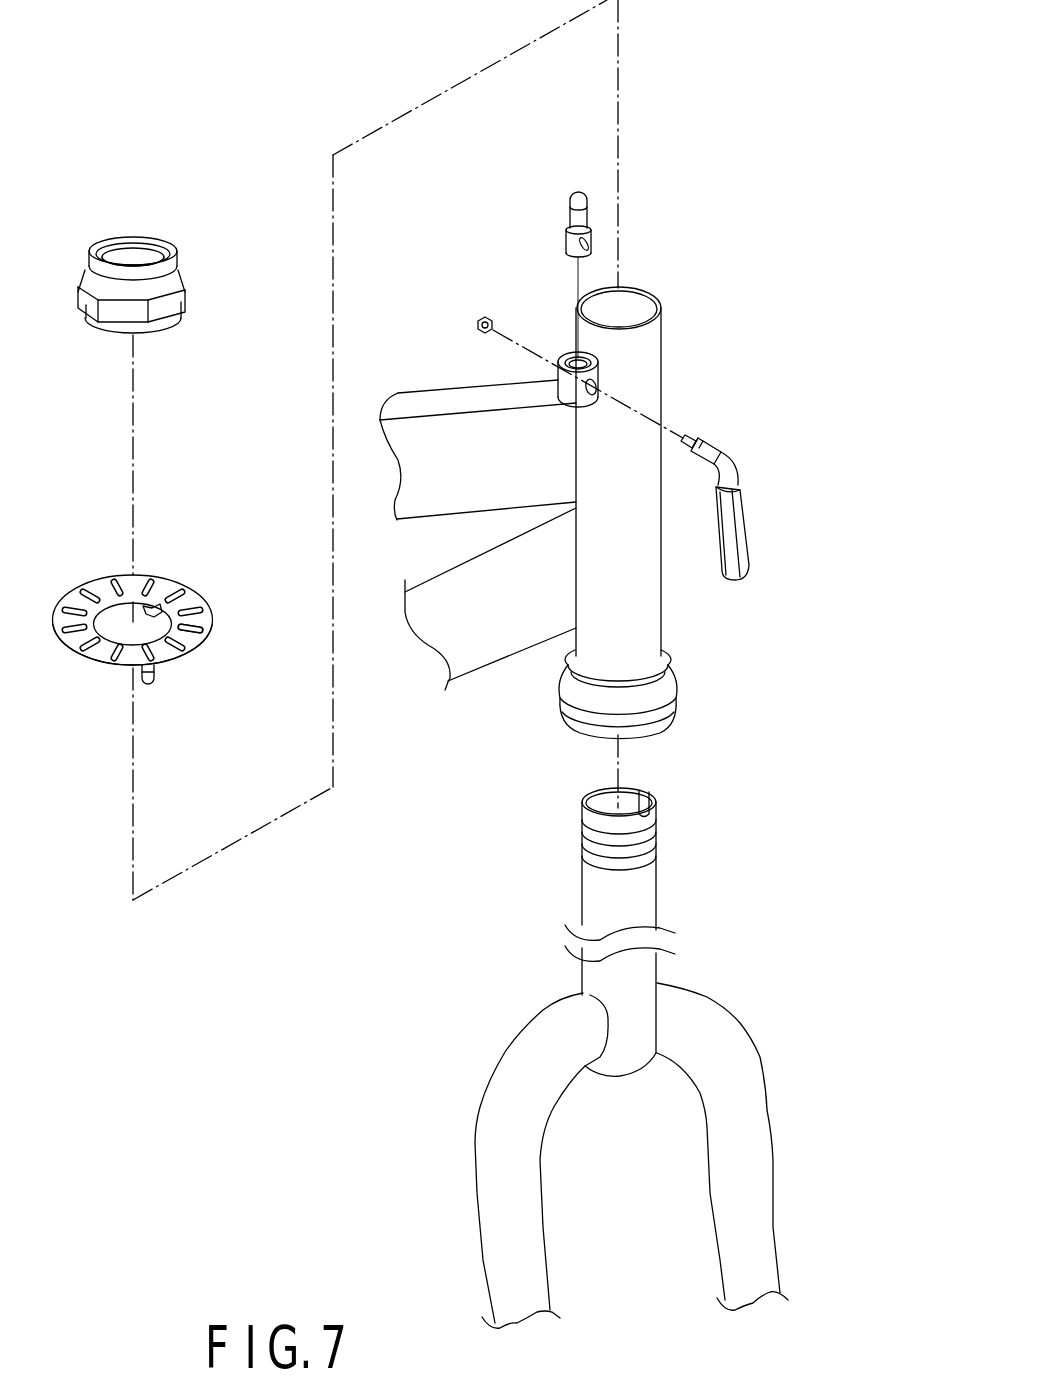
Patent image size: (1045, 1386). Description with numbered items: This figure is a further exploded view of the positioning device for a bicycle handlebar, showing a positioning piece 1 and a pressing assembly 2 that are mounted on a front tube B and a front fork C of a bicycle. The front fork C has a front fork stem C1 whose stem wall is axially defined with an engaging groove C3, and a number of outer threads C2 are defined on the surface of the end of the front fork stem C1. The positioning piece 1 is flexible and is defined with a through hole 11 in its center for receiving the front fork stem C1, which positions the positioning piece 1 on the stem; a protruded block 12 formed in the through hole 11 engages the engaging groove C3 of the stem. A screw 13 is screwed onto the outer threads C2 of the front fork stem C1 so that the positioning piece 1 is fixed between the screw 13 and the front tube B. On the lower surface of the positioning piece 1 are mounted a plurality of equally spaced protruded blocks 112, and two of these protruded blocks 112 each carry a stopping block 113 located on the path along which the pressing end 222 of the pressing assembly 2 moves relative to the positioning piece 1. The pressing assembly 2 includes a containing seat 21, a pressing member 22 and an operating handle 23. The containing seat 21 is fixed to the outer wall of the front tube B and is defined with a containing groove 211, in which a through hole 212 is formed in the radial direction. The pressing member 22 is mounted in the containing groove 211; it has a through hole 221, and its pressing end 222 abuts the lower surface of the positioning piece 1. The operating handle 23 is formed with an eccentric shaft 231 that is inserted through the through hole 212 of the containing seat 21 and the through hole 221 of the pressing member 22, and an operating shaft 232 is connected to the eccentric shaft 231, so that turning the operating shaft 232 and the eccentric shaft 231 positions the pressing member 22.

The positioning piece 1 is at (170, 560).
The through hole 11 is at (118, 620).
The protruded block 12 is at (154, 608).
The protruded blocks 112 is at (194, 629).
The stopping block 113 is at (152, 680).
The screw 13 is at (100, 252).
The pressing assembly 2 is at (750, 225).
The containing seat 21 is at (601, 382).
The containing groove 211 is at (578, 356).
The through hole 212 is at (597, 388).
The pressing member 22 is at (560, 212).
The through hole 221 is at (567, 240).
The pressing end 222 is at (578, 196).
The operating handle 23 is at (755, 497).
The eccentric shaft 231 is at (706, 442).
The operating shaft 232 is at (749, 546).
The front tube B is at (652, 585).
The front fork C is at (722, 997).
The front fork stem C1 is at (584, 910).
The outer threads C2 is at (598, 832).
The engaging groove C3 is at (648, 792).